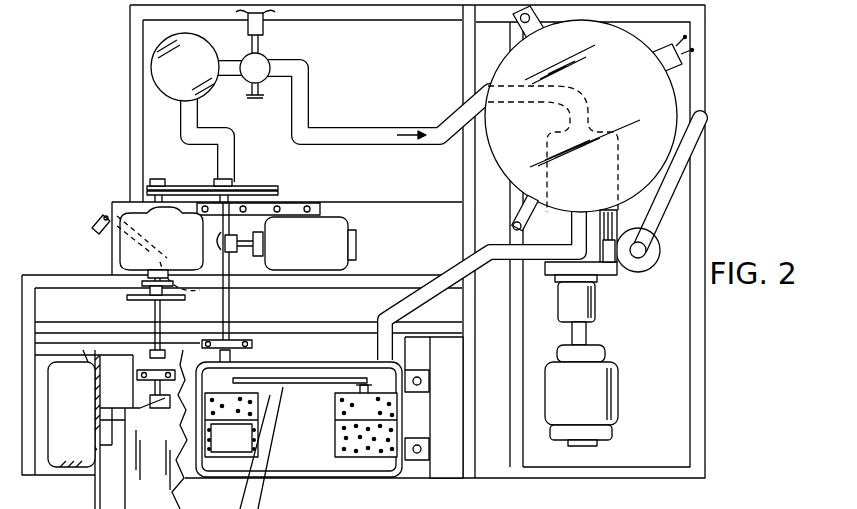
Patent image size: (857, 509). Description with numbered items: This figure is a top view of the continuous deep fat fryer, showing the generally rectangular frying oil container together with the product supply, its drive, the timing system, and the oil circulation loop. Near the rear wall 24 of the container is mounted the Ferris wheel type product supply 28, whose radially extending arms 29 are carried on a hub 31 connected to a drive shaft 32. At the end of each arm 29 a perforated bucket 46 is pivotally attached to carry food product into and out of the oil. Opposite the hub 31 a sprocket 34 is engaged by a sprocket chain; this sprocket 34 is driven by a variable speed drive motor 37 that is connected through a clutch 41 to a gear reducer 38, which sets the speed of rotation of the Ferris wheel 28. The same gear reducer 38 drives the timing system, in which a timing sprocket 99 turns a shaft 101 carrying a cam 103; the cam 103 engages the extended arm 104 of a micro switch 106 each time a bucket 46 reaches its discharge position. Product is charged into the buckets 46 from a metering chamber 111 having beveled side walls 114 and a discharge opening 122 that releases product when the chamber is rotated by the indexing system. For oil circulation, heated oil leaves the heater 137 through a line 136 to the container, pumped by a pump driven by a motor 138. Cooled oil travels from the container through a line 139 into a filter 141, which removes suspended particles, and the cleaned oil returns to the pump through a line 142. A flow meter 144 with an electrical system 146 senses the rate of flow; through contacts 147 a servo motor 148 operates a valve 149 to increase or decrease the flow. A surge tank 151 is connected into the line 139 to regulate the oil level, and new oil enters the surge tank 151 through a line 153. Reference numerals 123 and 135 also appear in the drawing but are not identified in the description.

The rear wall 24 is at (346, 360).
The Ferris wheel type product supply 28 is at (280, 378).
The arms 29 is at (296, 386).
The hub 31 is at (268, 505).
The drive shaft 32 is at (233, 270).
The sprocket 34 is at (266, 184).
The variable speed drive motor 37 is at (332, 251).
The gear reducer 38 is at (152, 235).
The clutch 41 is at (240, 241).
The bucket 46 is at (335, 438).
The timing sprocket 99 is at (177, 297).
The shaft 101 is at (145, 287).
The cam 103 is at (140, 371).
The extended arm 104 is at (142, 336).
The micro switch 106 is at (245, 311).
The metering chamber 111 is at (130, 425).
The beveled side walls 114 is at (520, 505).
The opening 122 is at (480, 505).
The support 123 is at (441, 505).
The outlet pipe 135 is at (707, 130).
The line 136 is at (487, 243).
The heater 137 is at (591, 64).
The motor 138 is at (600, 390).
The line 139 is at (222, 137).
The filter 141 is at (152, 68).
The line 142 is at (340, 128).
The flow meter 144 is at (650, 266).
The electrical system 146 is at (607, 250).
The contacts 147 is at (600, 268).
The servo motor 148 is at (249, 29).
The valve 149 is at (266, 61).
The surge tank 151 is at (148, 298).
The line 153 is at (95, 232).